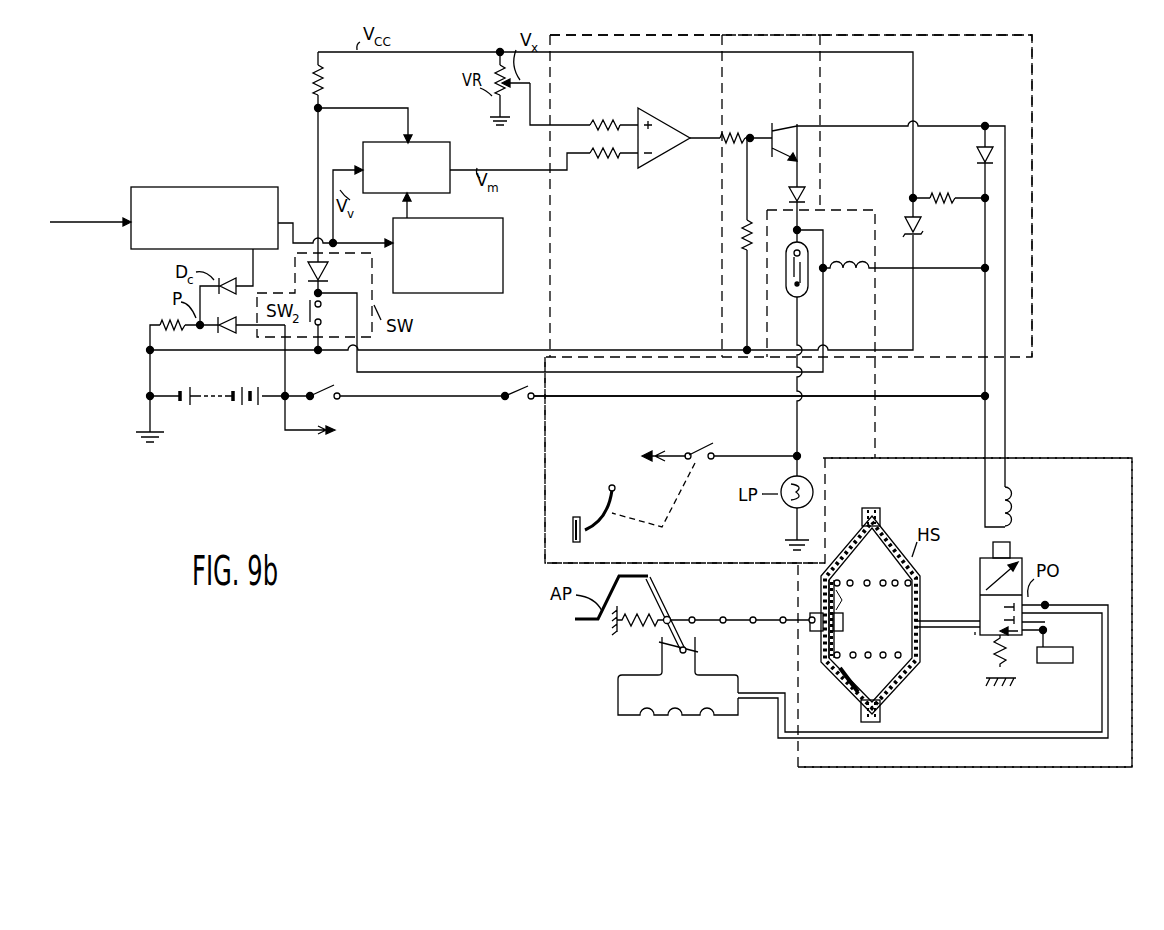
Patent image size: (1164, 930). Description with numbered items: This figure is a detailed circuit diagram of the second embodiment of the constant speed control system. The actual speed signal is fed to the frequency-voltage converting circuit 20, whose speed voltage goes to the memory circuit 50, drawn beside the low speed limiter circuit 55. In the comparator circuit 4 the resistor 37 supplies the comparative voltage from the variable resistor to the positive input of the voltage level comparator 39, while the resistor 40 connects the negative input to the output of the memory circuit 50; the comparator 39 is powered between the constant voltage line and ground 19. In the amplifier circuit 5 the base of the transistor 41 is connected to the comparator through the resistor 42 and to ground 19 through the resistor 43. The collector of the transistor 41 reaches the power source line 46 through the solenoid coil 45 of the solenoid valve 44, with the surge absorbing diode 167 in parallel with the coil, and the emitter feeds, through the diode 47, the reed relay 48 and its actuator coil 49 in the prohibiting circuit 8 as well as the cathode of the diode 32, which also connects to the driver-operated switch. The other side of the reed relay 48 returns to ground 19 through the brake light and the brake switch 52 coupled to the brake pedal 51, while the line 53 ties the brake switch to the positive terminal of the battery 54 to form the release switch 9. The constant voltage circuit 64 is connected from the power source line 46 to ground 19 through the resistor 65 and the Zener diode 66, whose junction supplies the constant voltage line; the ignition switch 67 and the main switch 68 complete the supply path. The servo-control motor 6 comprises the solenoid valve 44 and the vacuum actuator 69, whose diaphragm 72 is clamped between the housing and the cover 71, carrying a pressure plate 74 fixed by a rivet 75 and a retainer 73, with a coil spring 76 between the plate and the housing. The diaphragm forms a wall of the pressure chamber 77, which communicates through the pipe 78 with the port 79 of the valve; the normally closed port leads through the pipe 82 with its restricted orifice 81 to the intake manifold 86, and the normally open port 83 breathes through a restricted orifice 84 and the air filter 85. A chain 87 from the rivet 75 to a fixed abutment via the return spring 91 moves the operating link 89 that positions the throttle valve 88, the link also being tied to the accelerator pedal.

The frequency-voltage converting circuit 20 is at (131, 200).
The memory circuit 50 is at (419, 142).
The low speed limiter circuit 55 is at (503, 255).
The diode 32 is at (326, 270).
The resistor 37 is at (618, 113).
The voltage level comparator 39 is at (672, 119).
The resistor 40 is at (604, 161).
The resistor 42 is at (741, 133).
The transistor 41 is at (784, 121).
The diode 47 is at (789, 194).
The resistor 43 is at (745, 240).
The prohibiting circuit 8 is at (855, 210).
The reed relay 48 is at (788, 282).
The actuator coil 49 is at (835, 278).
The resistor 65 is at (946, 195).
The Zener diode 66 is at (924, 228).
The surge absorbing diode 167 is at (976, 151).
The comparator circuit 4 is at (662, 36).
The amplifier circuit 5 is at (788, 33).
The constant voltage circuit 64 is at (983, 34).
The power source line 46 is at (928, 402).
The battery 54 is at (228, 400).
The ground 19 is at (155, 441).
The ignition switch 67 is at (326, 388).
The line 53 is at (325, 432).
The main switch 68 is at (512, 405).
The release switch 9 is at (545, 470).
The brake switch 52 is at (702, 448).
The brake pedal 51 is at (602, 512).
The servo-control motor 6 is at (1090, 456).
The solenoid coil 45 is at (1015, 494).
The solenoid valve 44 is at (1020, 560).
The normally open port 83 is at (1022, 635).
The pipe 82 is at (1095, 603).
The restricted orifice 81 is at (1048, 602).
The port 84 is at (1048, 623).
The air filter 85 is at (1058, 663).
The pipe 78 is at (945, 630).
The port 79 is at (977, 633).
The vacuum actuator 69 is at (892, 540).
The cover 71 is at (856, 545).
The retainer 73 is at (824, 610).
The rivet 75 is at (816, 630).
The pressure plate 74 is at (837, 600).
The coil spring 76 is at (885, 587).
The pressure chamber 77 is at (883, 682).
The diaphragm 72 is at (850, 675).
The intake manifold 86 is at (725, 705).
The operating link 89 is at (665, 608).
The throttle valve 88 is at (700, 626).
The return spring 91 is at (640, 625).
The chain 87 is at (724, 625).